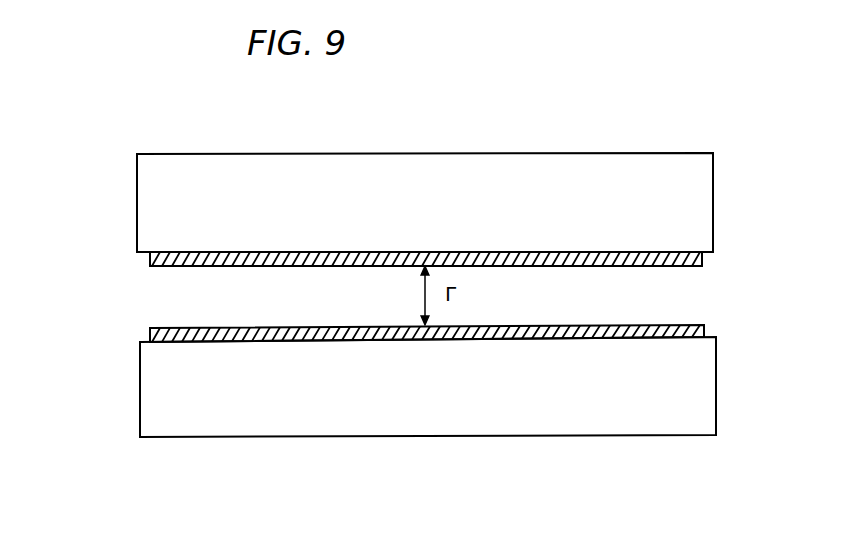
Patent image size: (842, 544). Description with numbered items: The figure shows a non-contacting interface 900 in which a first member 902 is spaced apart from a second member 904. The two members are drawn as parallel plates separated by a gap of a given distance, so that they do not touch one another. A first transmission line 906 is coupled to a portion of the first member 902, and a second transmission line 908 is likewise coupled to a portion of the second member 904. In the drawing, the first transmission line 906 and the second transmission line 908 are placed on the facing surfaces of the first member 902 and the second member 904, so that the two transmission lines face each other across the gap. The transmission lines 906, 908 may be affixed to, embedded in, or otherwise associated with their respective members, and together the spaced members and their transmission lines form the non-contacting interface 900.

The non-contacting interface 900 is at (198, 116).
The first member 902 is at (636, 167).
The second member 904 is at (643, 415).
The first transmission line 906 is at (150, 260).
The second transmission line 908 is at (150, 333).